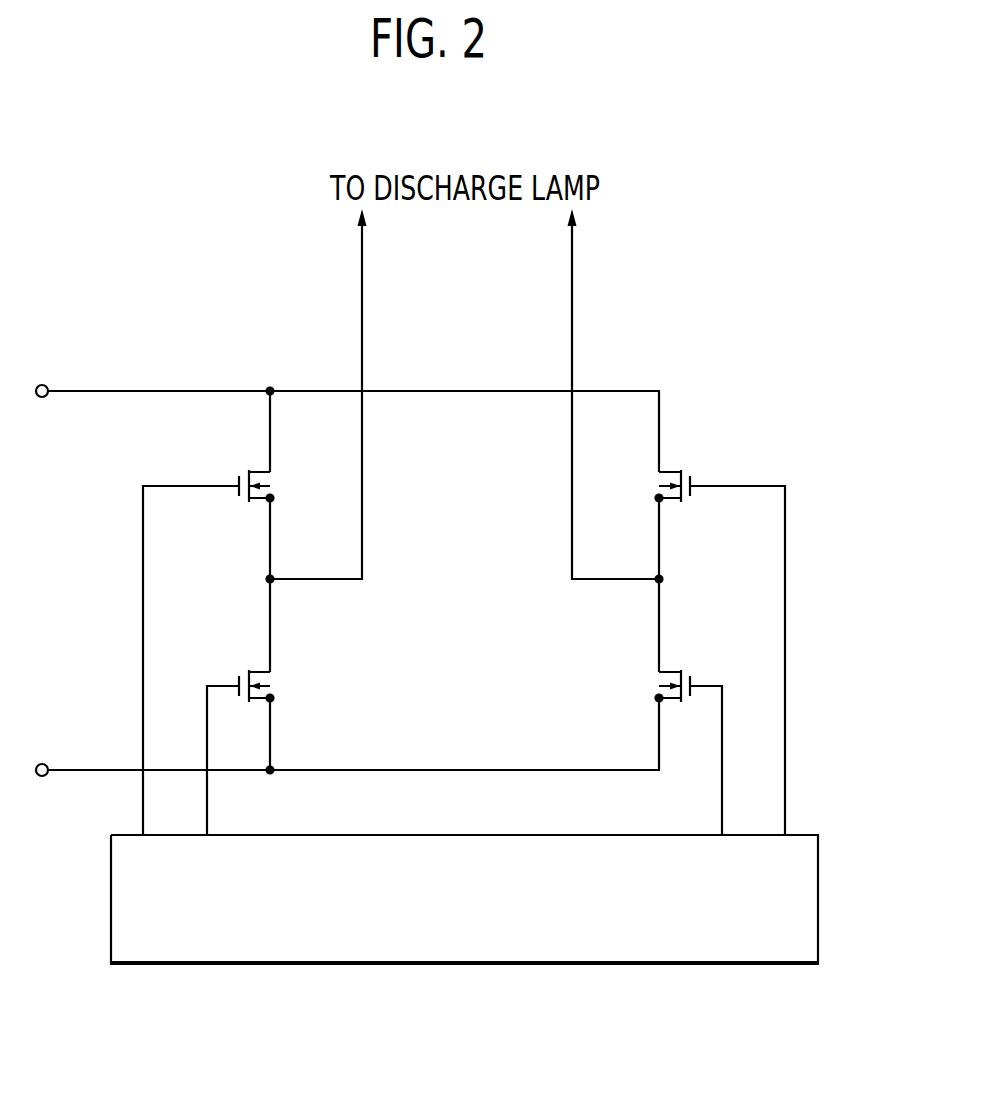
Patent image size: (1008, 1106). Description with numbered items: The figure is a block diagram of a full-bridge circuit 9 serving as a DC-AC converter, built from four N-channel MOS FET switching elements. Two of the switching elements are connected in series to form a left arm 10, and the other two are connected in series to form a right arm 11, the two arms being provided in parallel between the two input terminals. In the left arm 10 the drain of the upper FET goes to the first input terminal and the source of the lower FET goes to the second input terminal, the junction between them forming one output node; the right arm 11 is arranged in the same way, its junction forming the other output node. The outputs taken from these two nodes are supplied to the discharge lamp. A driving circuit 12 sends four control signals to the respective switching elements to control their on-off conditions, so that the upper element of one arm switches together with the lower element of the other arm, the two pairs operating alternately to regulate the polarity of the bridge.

The full-bridge circuit 9 is at (262, 298).
The left arm 10 is at (391, 557).
The right arm 11 is at (702, 416).
The driving circuit 12 is at (779, 964).